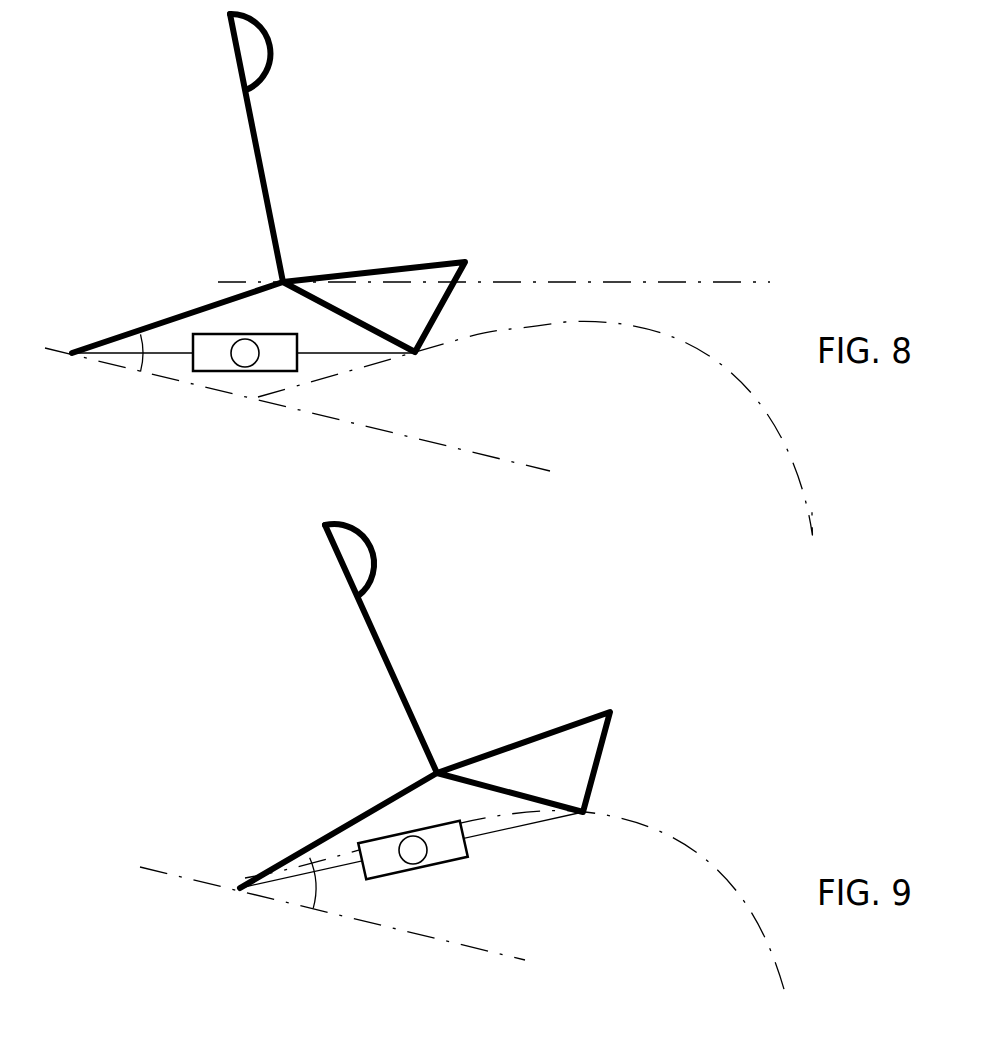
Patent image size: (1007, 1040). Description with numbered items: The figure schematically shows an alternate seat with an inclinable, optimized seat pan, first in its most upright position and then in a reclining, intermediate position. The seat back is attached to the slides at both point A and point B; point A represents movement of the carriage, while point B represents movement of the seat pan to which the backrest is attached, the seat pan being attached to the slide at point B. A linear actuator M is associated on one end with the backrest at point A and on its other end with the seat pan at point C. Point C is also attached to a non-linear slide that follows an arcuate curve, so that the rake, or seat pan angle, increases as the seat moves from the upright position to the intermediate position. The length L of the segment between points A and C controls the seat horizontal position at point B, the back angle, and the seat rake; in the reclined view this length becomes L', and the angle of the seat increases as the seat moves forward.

In FIG. 8, the point A is at (169, 317).
In FIG. 9, the point A is at (331, 845).
In FIG. 8, the point B is at (266, 148).
In FIG. 9, the point B is at (393, 648).
In FIG. 8, the point C is at (374, 321).
In FIG. 9, the point C is at (523, 777).
In FIG. 8, the linear actuator M is at (245, 352).
In FIG. 9, the linear actuator M is at (413, 850).
In FIG. 8, the length of the AC segment L is at (243, 375).
In FIG. 9, the length of the AC segment in the reclining position L' is at (411, 857).